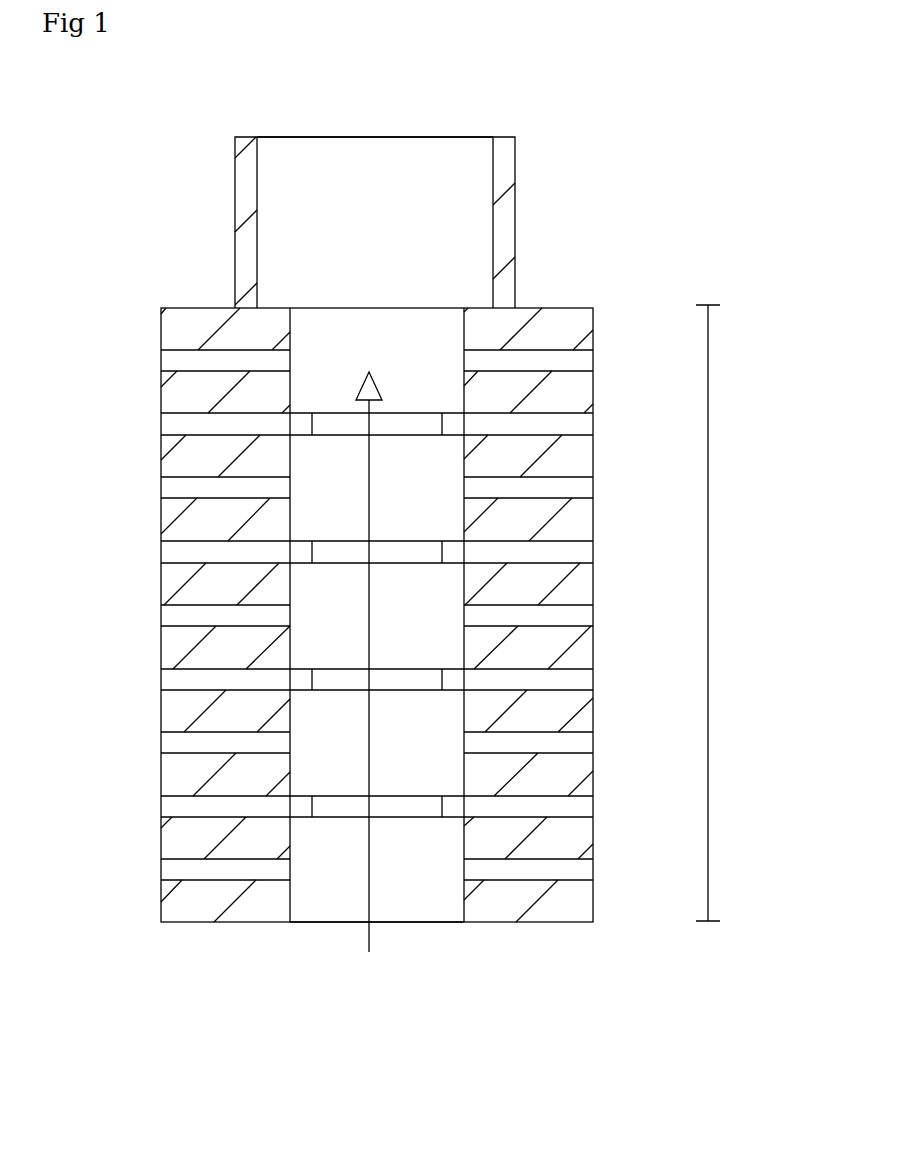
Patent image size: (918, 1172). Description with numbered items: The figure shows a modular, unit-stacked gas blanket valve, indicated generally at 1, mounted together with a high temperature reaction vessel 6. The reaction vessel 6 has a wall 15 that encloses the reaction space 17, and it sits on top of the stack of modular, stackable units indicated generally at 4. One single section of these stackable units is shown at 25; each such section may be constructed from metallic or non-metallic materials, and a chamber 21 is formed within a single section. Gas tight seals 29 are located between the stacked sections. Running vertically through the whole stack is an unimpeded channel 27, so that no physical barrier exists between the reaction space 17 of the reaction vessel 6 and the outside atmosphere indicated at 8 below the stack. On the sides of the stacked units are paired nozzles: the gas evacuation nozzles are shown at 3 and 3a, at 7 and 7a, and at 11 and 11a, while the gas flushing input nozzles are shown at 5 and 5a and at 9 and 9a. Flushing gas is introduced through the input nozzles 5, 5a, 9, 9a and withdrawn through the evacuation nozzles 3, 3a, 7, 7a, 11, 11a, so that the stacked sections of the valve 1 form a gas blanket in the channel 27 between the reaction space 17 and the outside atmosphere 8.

The gas blanket valve 1 is at (272, 957).
The gas evacuation nozzle 3 is at (685, 358).
The gas evacuation nozzle 3a is at (65, 367).
The modular stackable units 4 is at (735, 598).
The gas flushing input nozzle 5 is at (603, 485).
The gas flushing input nozzle 5a is at (150, 492).
The high temperature reaction vessel 6 is at (534, 210).
The gas evacuation nozzle 7 is at (691, 613).
The gas evacuation nozzle 7a is at (65, 620).
The outside atmosphere 8 is at (412, 949).
The gas flushing input nozzle 9 is at (603, 737).
The gas flushing input nozzle 9a is at (150, 743).
The gas evacuation nozzle 11 is at (689, 868).
The gas evacuation nozzle 11a is at (57, 870).
The wall of the reaction vessel 15 is at (227, 183).
The reaction space 17 is at (422, 188).
The chamber 21 is at (355, 342).
The single section of the stackable units 25 is at (177, 328).
The unimpeded channel 27 is at (367, 888).
The gas tight seal 29 is at (172, 425).